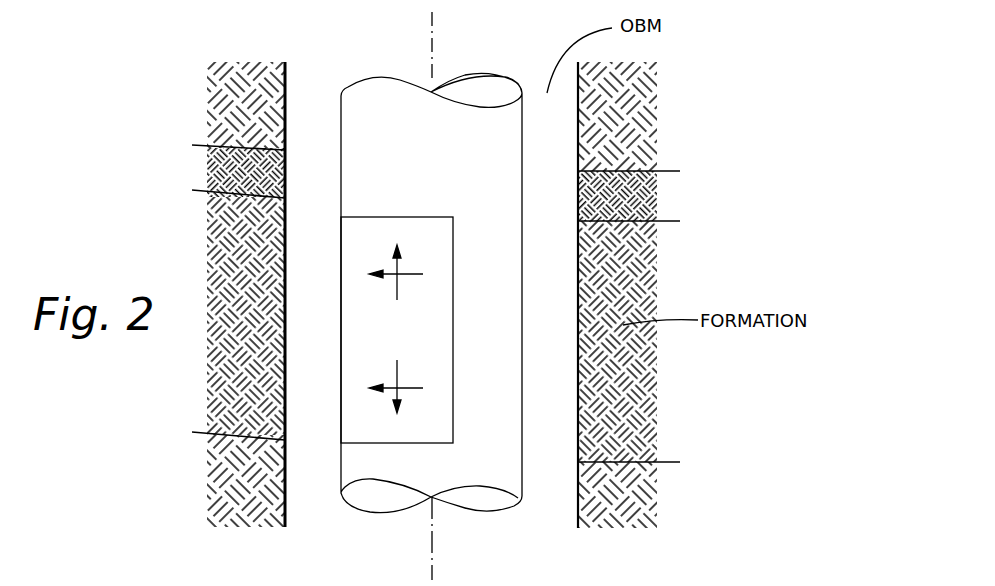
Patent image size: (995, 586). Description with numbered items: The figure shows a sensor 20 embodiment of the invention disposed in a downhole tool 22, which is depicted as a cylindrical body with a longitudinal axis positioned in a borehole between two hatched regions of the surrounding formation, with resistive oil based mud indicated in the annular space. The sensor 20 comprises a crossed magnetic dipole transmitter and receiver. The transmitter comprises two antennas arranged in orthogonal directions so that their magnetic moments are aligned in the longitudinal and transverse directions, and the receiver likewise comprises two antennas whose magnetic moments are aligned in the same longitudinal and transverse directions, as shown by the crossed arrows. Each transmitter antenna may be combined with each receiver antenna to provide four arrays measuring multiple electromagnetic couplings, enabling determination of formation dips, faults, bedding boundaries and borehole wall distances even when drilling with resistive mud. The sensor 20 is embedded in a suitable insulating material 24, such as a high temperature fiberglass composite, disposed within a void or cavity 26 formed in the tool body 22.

The sensor 20 is at (429, 196).
The downhole tool 22 is at (487, 88).
The insulating material 24 is at (370, 225).
The void or cavity 26 is at (427, 445).